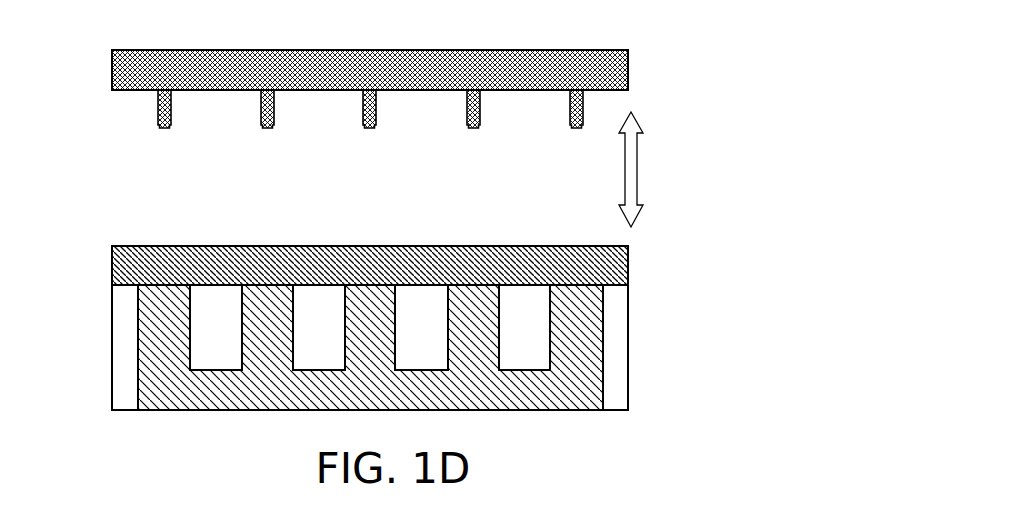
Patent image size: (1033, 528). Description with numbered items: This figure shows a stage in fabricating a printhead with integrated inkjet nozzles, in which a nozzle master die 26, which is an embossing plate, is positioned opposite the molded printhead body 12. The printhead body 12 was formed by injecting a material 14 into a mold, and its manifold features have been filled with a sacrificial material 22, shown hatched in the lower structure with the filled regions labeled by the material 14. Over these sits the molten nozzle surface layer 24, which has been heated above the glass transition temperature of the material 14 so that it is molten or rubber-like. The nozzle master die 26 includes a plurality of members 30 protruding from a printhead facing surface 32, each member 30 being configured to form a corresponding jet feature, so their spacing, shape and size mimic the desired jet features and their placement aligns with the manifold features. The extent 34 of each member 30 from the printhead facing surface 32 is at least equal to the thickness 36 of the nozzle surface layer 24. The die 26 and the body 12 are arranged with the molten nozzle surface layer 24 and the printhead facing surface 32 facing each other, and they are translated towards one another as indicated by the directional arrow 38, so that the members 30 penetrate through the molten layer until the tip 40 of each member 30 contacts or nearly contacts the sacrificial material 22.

The printhead body 12 is at (644, 253).
The material 14 is at (207, 338).
The sacrificial material 22 is at (360, 395).
The molten nozzle surface layer 24 is at (360, 273).
The nozzle master die 26 is at (361, 76).
The members 30 is at (172, 103).
The printhead facing surface 32 is at (215, 90).
The extent 34 is at (72, 55).
The thickness 36 is at (72, 210).
The directional arrow 38 is at (637, 169).
The tip 40 is at (165, 129).